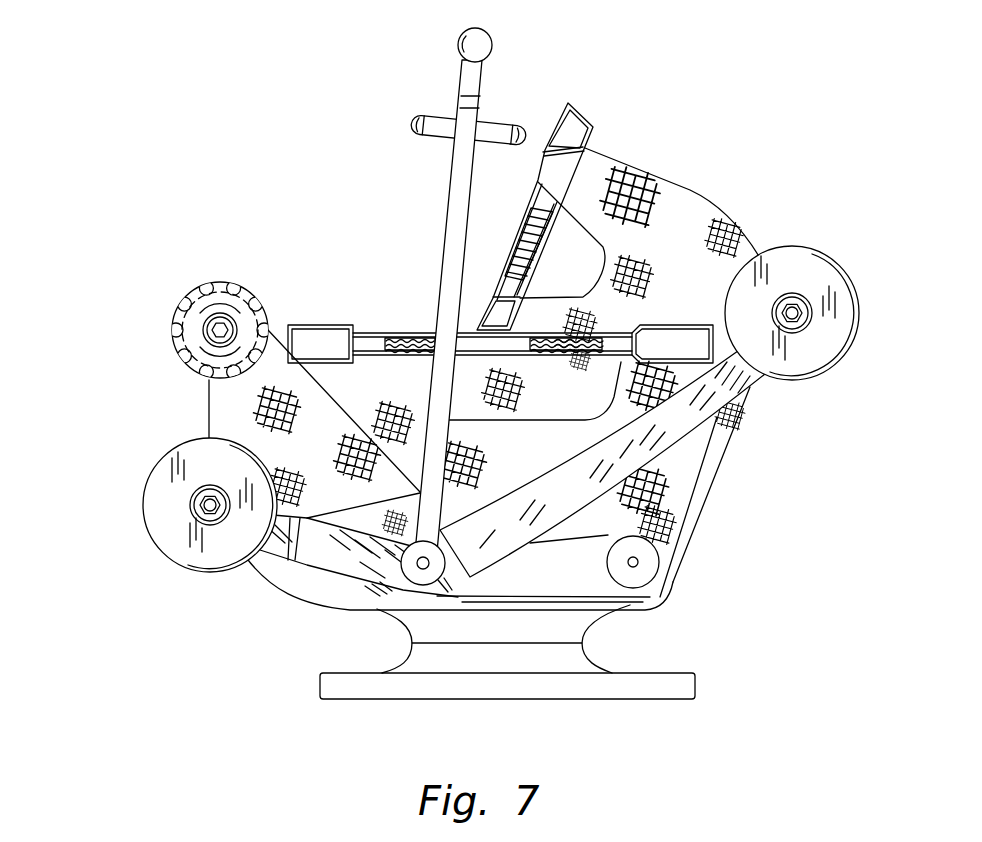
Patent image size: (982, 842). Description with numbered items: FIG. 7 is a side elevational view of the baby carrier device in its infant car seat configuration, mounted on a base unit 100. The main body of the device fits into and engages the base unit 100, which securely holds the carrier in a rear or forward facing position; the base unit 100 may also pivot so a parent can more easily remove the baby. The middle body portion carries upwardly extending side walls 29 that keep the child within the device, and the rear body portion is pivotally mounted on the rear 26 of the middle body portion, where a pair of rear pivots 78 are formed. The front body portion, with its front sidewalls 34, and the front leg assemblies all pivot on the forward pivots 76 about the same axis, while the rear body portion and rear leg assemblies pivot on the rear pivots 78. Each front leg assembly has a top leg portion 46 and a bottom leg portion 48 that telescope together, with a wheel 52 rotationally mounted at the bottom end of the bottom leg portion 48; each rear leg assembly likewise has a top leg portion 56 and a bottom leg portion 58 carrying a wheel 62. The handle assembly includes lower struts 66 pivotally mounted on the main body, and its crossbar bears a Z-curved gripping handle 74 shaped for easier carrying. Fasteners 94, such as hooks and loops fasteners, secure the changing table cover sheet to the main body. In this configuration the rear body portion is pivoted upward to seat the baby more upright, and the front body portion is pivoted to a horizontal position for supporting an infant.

The rear 26 is at (688, 196).
The side walls 29 is at (480, 457).
The front sidewalls 34 is at (237, 410).
The top leg portion 46 is at (540, 520).
The bottom leg portion 48 is at (750, 386).
The wheel 52 is at (818, 250).
The top leg portion 56 is at (590, 622).
The bottom leg portion 58 is at (283, 552).
The wheel 62 is at (160, 512).
The lower struts 66 is at (452, 205).
The Z-curved gripping handle 74 is at (411, 124).
The forward pivots 76 is at (420, 567).
The rear pivots 78 is at (640, 563).
The fasteners 94 is at (197, 293).
The base unit 100 is at (697, 682).